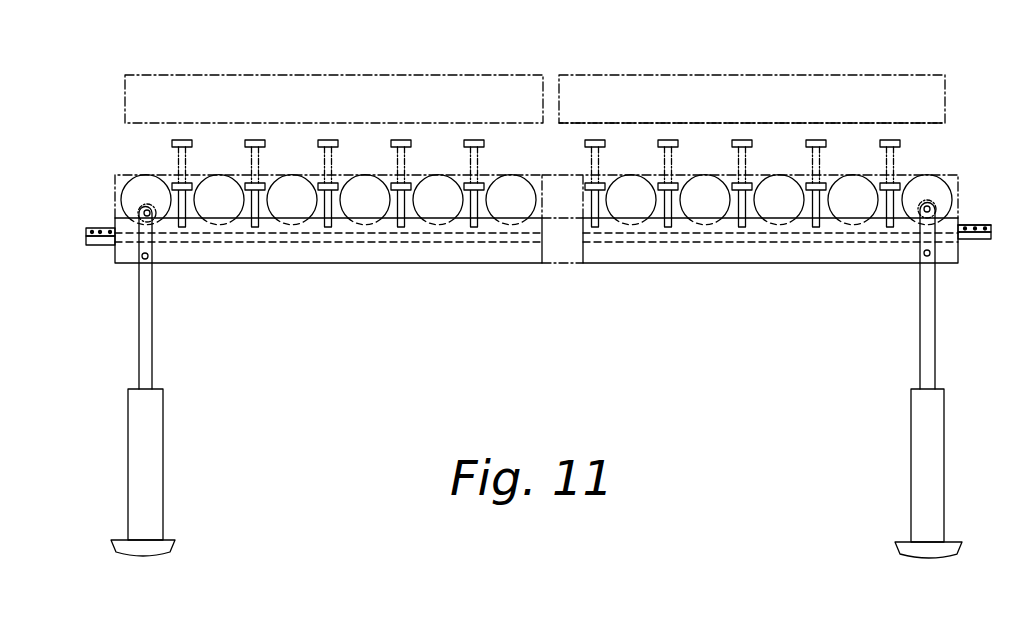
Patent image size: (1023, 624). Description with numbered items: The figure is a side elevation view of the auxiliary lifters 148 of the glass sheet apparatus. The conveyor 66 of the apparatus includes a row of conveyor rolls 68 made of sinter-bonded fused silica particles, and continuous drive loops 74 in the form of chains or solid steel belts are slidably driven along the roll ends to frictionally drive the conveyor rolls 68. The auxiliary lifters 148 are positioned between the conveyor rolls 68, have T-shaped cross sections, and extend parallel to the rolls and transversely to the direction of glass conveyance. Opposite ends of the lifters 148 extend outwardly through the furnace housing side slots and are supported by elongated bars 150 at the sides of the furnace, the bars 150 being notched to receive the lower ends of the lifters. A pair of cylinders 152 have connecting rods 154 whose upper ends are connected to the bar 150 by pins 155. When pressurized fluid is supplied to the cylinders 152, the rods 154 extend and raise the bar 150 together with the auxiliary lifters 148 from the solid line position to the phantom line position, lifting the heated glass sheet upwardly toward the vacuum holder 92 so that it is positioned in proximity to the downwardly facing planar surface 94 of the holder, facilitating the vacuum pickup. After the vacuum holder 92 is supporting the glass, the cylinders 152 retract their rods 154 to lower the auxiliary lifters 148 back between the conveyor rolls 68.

The vacuum holder 92 is at (918, 73).
The downwardly facing planar surface 94 is at (685, 128).
The auxiliary lifters 148 is at (250, 186).
The conveyor rolls 68 is at (288, 185).
The elongated bars 150 is at (433, 248).
The continuous drive loops 74 is at (102, 228).
The conveyor 66 is at (970, 224).
The pins 155 is at (150, 216).
The connecting rods 154 is at (147, 322).
The cylinders 152 is at (152, 418).